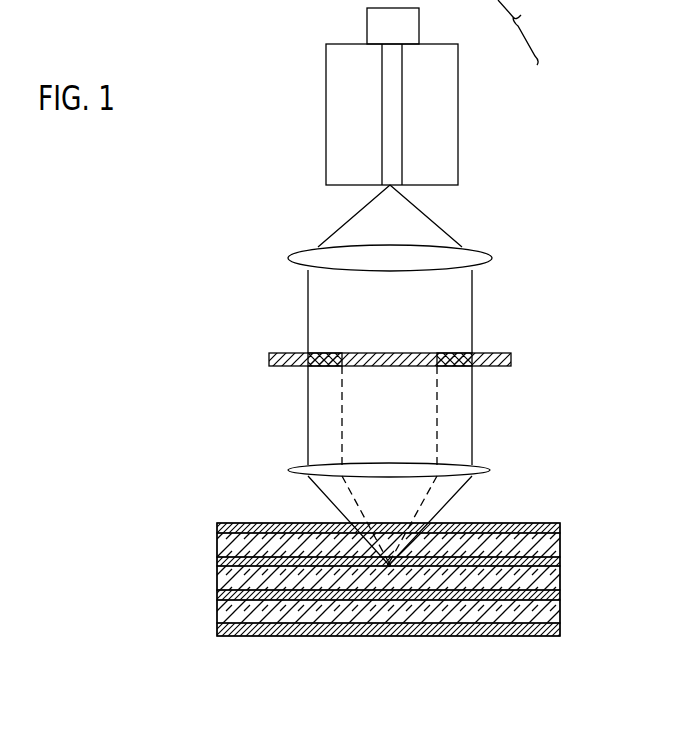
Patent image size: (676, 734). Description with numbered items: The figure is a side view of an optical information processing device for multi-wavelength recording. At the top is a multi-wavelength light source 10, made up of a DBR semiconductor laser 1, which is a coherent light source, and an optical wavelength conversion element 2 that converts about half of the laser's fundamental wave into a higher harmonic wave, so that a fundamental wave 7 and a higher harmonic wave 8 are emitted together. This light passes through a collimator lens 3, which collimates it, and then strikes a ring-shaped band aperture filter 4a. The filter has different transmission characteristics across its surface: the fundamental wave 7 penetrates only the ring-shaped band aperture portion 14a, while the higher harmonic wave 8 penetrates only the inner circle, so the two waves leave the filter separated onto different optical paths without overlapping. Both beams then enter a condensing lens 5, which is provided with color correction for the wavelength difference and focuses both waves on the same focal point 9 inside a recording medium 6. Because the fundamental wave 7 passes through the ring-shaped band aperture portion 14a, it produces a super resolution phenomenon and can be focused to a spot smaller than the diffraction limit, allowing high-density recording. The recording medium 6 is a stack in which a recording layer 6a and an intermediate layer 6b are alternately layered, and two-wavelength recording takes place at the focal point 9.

The DBR semiconductor laser 1 is at (419, 22).
The optical wavelength conversion element 2 is at (458, 72).
The collimator lens 3 is at (483, 250).
The ring-shaped band aperture filter 4a is at (511, 359).
The condensing lens 5 is at (488, 468).
The recording medium 6 is at (283, 635).
The recording layer 6a is at (217, 535).
The intermediate layer 6b is at (217, 562).
The fundamental wave 7 is at (428, 212).
The higher harmonic wave 8 is at (437, 447).
The focal point 9 is at (389, 566).
The multi-wavelength light source 10 is at (523, 32).
The ring-shaped band aperture portion 14a is at (447, 353).